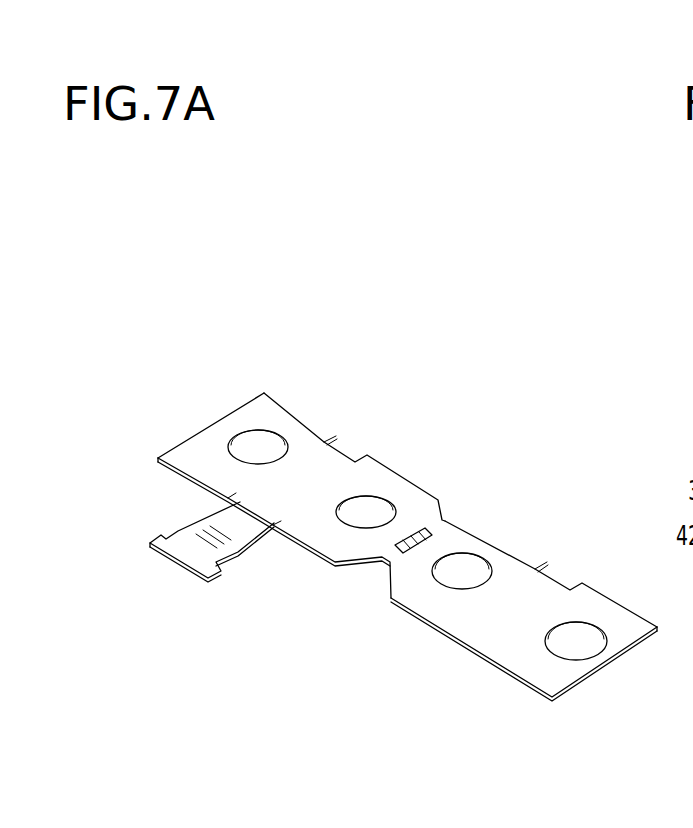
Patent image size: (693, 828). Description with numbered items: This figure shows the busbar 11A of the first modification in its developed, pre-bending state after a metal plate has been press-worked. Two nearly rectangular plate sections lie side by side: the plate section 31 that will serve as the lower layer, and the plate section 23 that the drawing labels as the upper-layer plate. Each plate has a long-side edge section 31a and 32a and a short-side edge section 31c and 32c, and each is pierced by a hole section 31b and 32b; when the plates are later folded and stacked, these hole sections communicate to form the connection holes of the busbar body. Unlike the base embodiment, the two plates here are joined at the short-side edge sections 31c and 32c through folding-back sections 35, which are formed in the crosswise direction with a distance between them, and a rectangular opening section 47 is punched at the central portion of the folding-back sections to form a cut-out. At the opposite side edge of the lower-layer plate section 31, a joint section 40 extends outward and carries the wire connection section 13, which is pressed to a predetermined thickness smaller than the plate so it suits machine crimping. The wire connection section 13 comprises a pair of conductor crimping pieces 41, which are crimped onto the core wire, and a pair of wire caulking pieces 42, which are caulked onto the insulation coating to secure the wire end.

The busbar 11A is at (197, 311).
The wire connection section 13 is at (202, 600).
The second plate portion 23 is at (513, 654).
The plate section 31 is at (205, 443).
The long-side edge section 31a is at (370, 497).
The hole section 31b is at (247, 440).
The short-side edge section 31c is at (168, 450).
The long-side edge section 32a is at (521, 540).
The hole section 32b is at (474, 590).
The short-side edge section 32c is at (413, 530).
The folding-back section 35 is at (441, 527).
The joint section 40 is at (258, 520).
The conductor crimping piece 41 is at (190, 563).
The wire caulking piece 42 is at (150, 542).
The rectangular opening section 47 is at (350, 452).